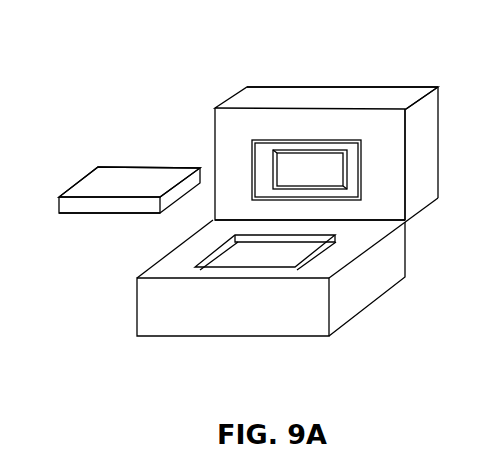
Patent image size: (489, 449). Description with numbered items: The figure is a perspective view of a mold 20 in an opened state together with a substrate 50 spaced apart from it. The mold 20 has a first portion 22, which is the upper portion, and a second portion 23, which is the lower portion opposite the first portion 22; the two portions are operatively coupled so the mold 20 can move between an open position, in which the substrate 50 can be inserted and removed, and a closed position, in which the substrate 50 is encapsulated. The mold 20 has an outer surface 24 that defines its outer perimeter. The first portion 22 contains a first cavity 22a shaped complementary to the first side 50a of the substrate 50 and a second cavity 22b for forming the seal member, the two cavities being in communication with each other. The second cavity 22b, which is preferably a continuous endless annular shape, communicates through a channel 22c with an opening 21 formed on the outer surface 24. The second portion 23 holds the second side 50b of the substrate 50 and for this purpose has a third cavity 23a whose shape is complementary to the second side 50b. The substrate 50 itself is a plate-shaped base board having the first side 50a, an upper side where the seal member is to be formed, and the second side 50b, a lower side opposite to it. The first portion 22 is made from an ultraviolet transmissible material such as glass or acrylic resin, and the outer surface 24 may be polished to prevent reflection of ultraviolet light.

The mold 20 is at (320, 72).
The opening 21 is at (318, 146).
The first portion 22 is at (432, 163).
The first cavity 22a is at (355, 153).
The second cavity 22b is at (357, 153).
The channel 22c is at (315, 146).
The second portion 23 is at (395, 265).
The third cavity 23a is at (267, 258).
The outer surface 24 is at (347, 98).
The substrate 50 is at (148, 182).
The first side 50a is at (106, 187).
The second side 50b is at (92, 213).